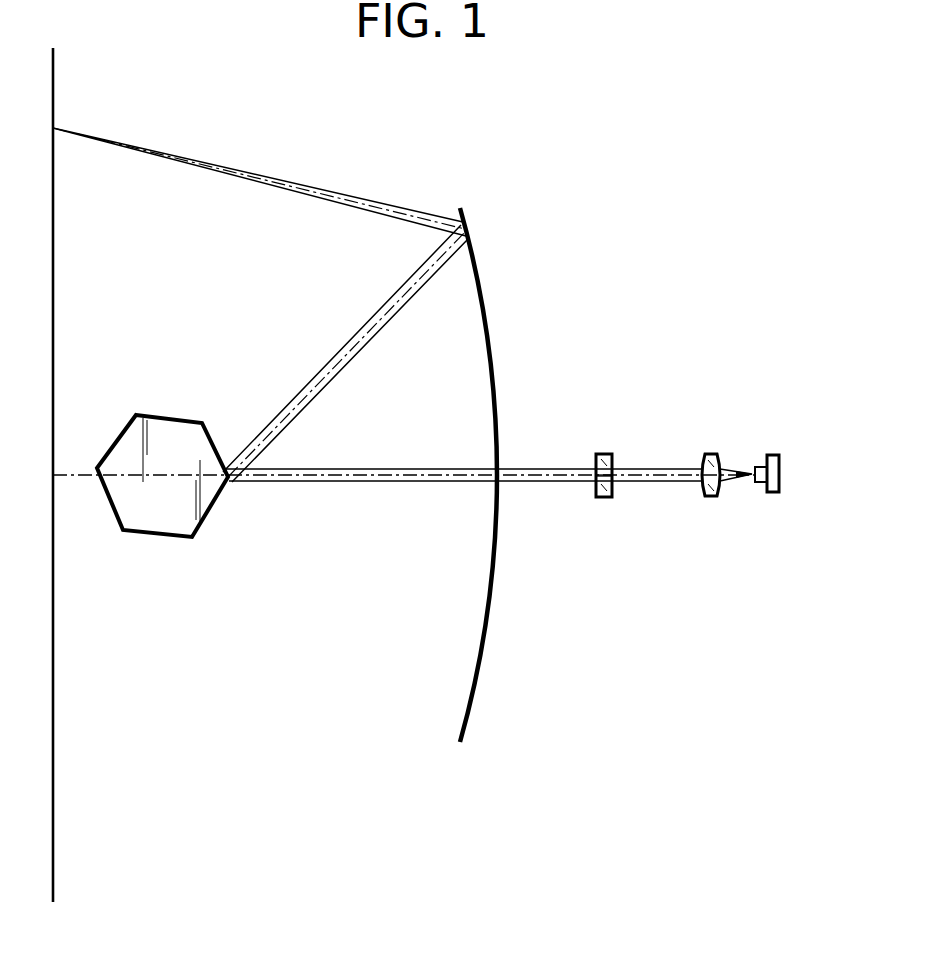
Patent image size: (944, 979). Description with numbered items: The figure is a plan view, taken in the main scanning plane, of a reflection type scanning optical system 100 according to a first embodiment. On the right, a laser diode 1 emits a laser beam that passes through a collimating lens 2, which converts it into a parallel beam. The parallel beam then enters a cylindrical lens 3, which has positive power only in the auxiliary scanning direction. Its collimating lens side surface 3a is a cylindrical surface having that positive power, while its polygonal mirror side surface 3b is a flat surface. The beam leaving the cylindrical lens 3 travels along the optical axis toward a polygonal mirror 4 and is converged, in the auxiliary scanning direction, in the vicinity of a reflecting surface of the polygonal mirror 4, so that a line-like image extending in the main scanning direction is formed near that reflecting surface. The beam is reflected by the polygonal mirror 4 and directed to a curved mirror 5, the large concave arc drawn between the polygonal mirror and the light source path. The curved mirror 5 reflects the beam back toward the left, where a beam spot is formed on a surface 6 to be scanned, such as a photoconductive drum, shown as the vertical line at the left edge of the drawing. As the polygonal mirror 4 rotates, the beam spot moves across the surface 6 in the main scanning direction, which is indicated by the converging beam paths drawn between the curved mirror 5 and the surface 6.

The scanning optical system 100 is at (672, 213).
The laser diode 1 is at (775, 492).
The collimating lens 2 is at (712, 497).
The cylindrical lens 3 is at (605, 497).
The collimating lens side surface 3a is at (613, 455).
The polygonal mirror side surface 3b is at (597, 455).
The polygonal mirror 4 is at (170, 427).
The curved mirror 5 is at (474, 686).
The surface to be scanned 6 is at (53, 755).